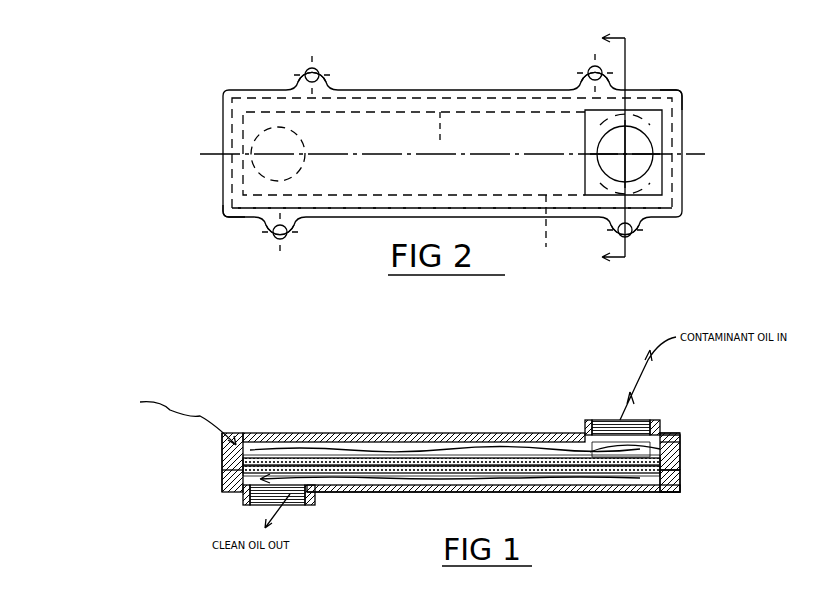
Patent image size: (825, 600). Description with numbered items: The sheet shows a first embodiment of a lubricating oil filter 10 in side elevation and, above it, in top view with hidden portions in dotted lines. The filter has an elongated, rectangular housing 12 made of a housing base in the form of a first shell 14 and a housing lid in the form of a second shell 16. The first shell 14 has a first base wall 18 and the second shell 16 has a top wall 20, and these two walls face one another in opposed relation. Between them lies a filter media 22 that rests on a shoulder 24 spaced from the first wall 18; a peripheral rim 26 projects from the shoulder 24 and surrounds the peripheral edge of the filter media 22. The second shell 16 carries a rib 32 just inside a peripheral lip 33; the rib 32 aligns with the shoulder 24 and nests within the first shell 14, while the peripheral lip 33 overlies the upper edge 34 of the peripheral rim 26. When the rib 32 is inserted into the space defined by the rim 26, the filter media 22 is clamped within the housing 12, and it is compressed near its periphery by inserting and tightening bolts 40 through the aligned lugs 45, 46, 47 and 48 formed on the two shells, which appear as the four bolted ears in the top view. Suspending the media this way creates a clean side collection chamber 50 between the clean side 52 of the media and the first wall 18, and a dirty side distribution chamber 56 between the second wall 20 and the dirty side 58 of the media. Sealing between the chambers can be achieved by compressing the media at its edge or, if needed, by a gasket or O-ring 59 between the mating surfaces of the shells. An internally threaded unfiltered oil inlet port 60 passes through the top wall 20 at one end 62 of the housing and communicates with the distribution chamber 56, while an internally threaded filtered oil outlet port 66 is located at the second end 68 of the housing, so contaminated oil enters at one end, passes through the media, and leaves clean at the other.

In FIG. 1, the lubricating oil filter 10 is at (238, 422).
In FIG. 1, the housing 12 is at (322, 425).
In FIG. 1, the first shell 14 is at (440, 495).
In FIG. 1, the second shell 16 is at (244, 498).
In FIG. 1, the first base wall 18 is at (600, 490).
In FIG. 1, the top wall 20 is at (388, 440).
In FIG. 2, the filter media 22 is at (472, 124).
In FIG. 1, the filter media 22 is at (392, 484).
In FIG. 1, the shoulder 24 is at (714, 478).
In FIG. 1, the peripheral rim 26 is at (680, 444).
In FIG. 2, the rib 32 is at (579, 148).
In FIG. 1, the rib 32 is at (625, 449).
In FIG. 2, the peripheral lip 33 is at (356, 217).
In FIG. 1, the peripheral lip 33 is at (236, 434).
In FIG. 1, the upper edge 34 is at (680, 438).
In FIG. 2, the bolts 40 is at (305, 68).
In FIG. 2, the lug 45 is at (324, 68).
In FIG. 2, the lug 46 is at (584, 66).
In FIG. 2, the lug 47 is at (290, 236).
In FIG. 2, the lug 48 is at (640, 240).
In FIG. 1, the clean side collection chamber 50 is at (548, 488).
In FIG. 1, the clean side 52 is at (650, 492).
In FIG. 1, the dirty side distribution chamber 56 is at (350, 442).
In FIG. 1, the dirty side 58 is at (222, 470).
In FIG. 1, the gasket or O-ring 59 is at (391, 391).
In FIG. 2, the unfiltered oil inlet port 60 is at (655, 130).
In FIG. 1, the unfiltered oil inlet port 60 is at (600, 415).
In FIG. 2, the first end 62 is at (682, 96).
In FIG. 1, the first end 62 is at (670, 433).
In FIG. 2, the filtered oil outlet port 66 is at (212, 105).
In FIG. 1, the filtered oil outlet port 66 is at (316, 500).
In FIG. 2, the second end 68 is at (222, 220).
In FIG. 1, the second end 68 is at (214, 461).